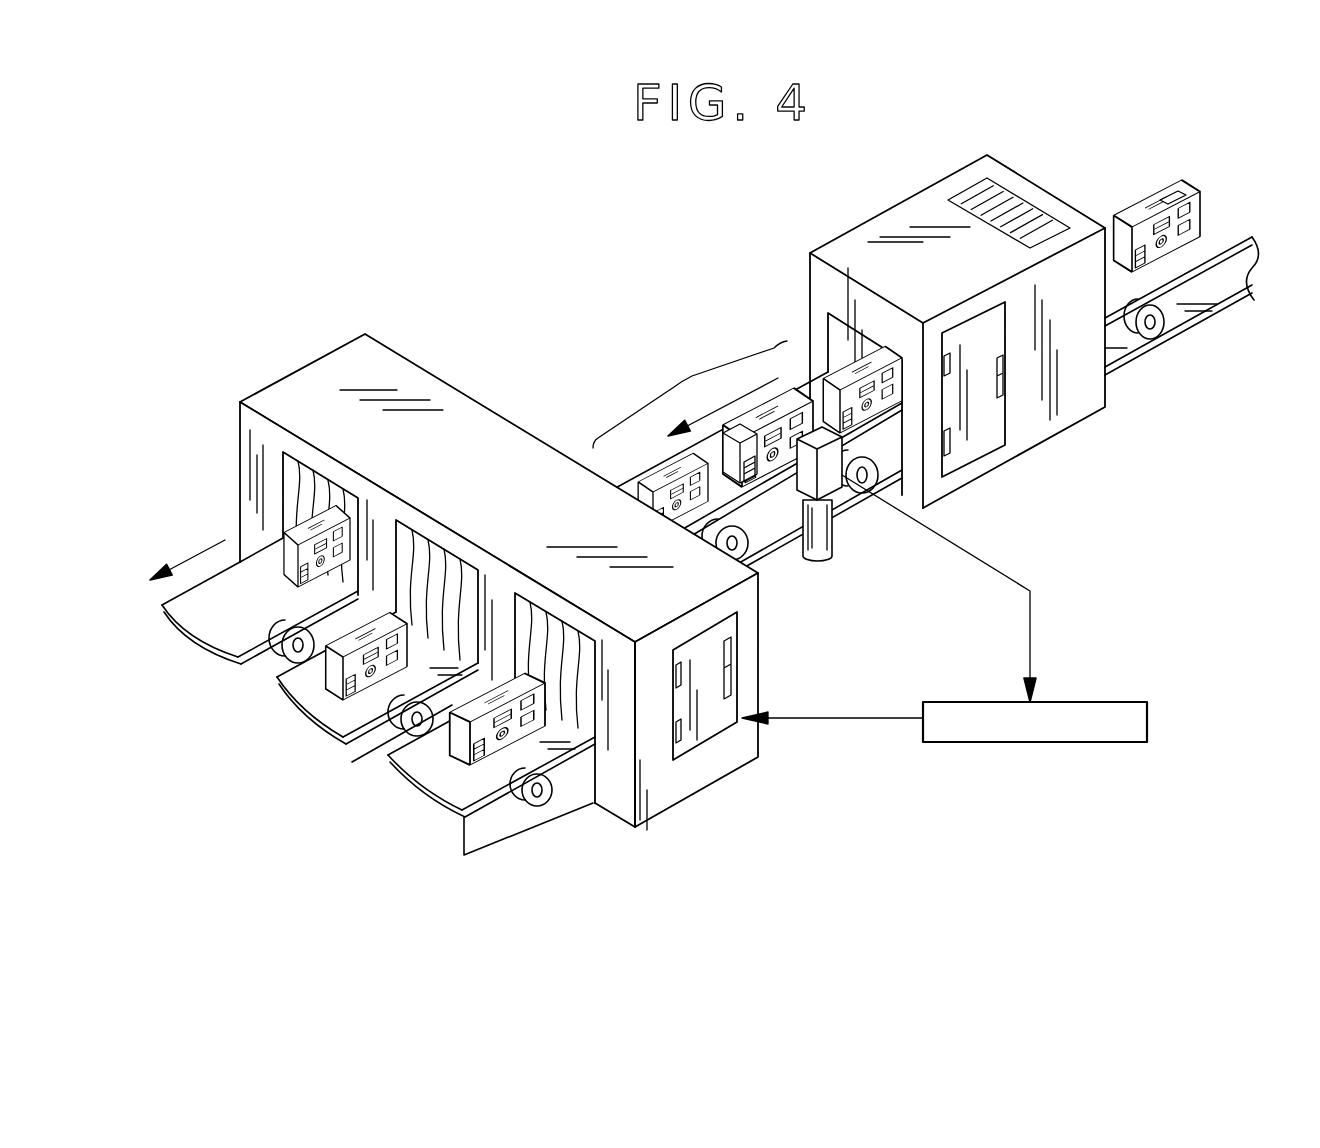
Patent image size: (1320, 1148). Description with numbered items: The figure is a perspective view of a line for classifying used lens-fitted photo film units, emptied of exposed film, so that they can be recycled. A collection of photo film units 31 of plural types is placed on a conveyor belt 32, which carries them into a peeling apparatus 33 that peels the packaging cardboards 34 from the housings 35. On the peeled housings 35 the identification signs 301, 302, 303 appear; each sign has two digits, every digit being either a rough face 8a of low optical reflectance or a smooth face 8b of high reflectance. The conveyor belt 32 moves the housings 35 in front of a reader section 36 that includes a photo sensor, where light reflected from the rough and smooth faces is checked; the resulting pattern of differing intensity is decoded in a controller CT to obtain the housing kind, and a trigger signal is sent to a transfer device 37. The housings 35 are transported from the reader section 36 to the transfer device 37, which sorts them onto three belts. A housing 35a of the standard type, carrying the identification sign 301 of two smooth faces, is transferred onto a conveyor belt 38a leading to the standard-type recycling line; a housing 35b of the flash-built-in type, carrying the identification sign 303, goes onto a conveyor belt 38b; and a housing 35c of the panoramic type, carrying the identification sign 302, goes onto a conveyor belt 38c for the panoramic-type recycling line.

The photo film units 31 is at (1140, 198).
The conveyor belt 32 is at (1228, 240).
The peeling apparatus 33 is at (1072, 413).
The packaging cardboards 34 is at (1197, 181).
The housings 35 is at (747, 454).
The reader section 36 is at (830, 547).
The transfer device 37 is at (718, 768).
The conveyor belt 38a is at (347, 712).
The conveyor belt 38b is at (453, 788).
The conveyor belt 38c is at (235, 633).
The identification sign 301 is at (315, 708).
The identification sign 302 is at (412, 762).
The identification sign 303 is at (287, 533).
The rough face 8a is at (746, 462).
The smooth face 8b is at (750, 478).
The housing 35a is at (328, 672).
The housing 35b is at (490, 748).
The housing 35c is at (287, 571).
The controller CT is at (1110, 742).